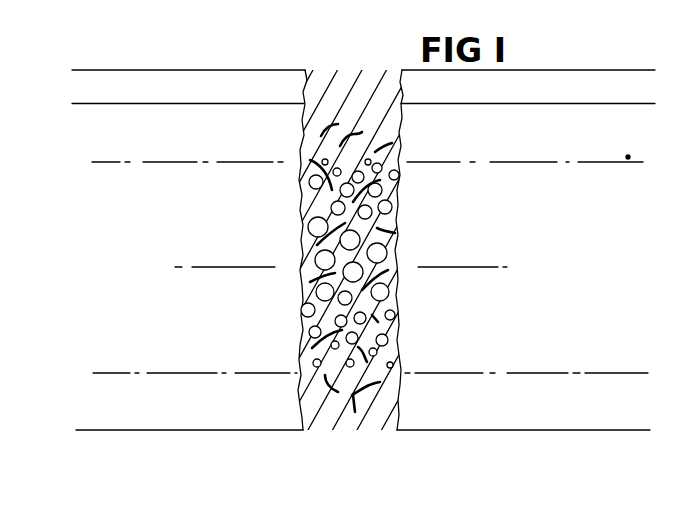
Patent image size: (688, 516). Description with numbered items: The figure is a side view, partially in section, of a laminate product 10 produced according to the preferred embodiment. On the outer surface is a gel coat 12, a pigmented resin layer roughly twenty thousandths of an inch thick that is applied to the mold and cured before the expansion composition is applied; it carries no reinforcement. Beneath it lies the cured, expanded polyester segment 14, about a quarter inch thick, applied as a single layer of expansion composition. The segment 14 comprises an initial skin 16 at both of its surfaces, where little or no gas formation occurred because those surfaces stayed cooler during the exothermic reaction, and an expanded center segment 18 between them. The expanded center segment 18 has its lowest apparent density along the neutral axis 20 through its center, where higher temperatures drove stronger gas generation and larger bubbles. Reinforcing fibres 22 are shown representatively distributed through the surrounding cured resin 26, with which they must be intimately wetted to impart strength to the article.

The laminate product 10 is at (272, 63).
The gel coat 12 is at (122, 83).
The expanded polyester segment 14 is at (82, 430).
The initial skin 16 is at (194, 138).
The expanded center segment 18 is at (468, 238).
The neutral axis 20 is at (490, 266).
The reinforcing fibres 22 is at (386, 144).
The cured resin 26 is at (373, 423).